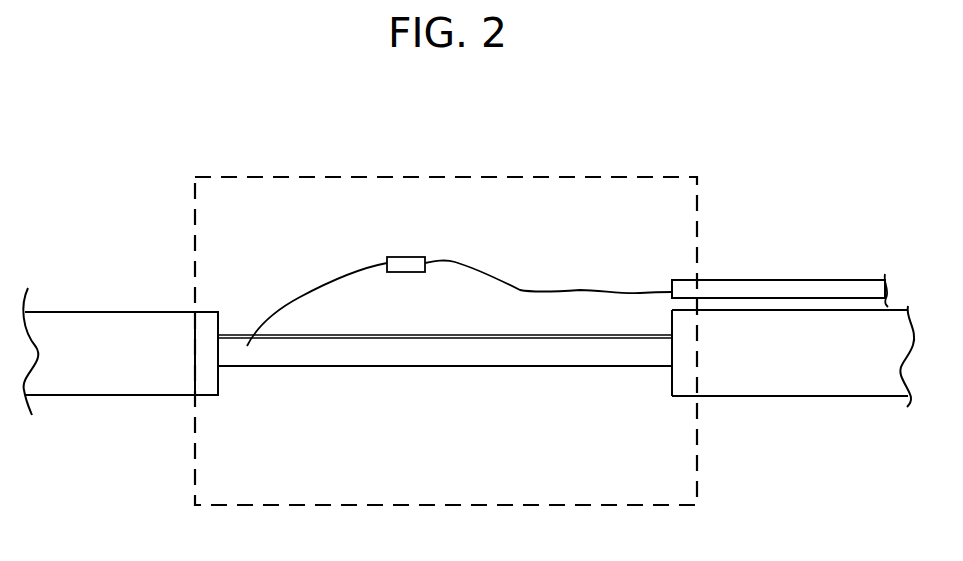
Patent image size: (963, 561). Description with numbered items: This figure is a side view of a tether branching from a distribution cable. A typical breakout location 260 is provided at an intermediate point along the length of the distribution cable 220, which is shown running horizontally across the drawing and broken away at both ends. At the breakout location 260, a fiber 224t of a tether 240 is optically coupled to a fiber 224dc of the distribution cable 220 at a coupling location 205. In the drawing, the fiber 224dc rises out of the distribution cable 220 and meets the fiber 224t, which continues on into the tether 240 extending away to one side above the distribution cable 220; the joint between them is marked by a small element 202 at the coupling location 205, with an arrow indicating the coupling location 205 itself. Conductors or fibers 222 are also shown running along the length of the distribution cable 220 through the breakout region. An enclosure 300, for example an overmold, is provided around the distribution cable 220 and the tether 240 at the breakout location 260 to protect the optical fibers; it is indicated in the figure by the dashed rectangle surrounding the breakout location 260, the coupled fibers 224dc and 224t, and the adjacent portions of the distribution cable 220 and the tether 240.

The enclosure 300 is at (662, 177).
The distribution cable 220 is at (149, 359).
The cable conductors 222 is at (307, 355).
The fiber of the distribution cable 224dc is at (300, 297).
The fiber of the tether 224t is at (462, 268).
The sensor device 202 is at (404, 263).
The coupling location 205 is at (401, 278).
The tether 240 is at (805, 293).
The breakout location 260 is at (400, 402).